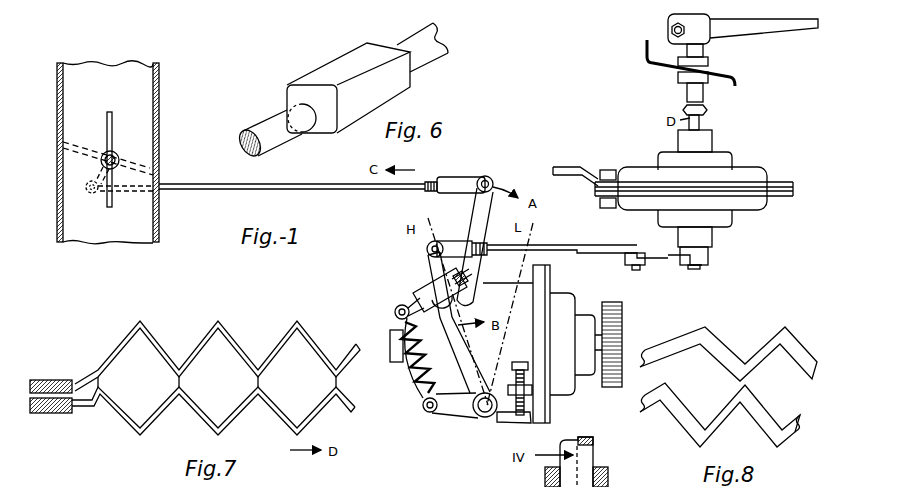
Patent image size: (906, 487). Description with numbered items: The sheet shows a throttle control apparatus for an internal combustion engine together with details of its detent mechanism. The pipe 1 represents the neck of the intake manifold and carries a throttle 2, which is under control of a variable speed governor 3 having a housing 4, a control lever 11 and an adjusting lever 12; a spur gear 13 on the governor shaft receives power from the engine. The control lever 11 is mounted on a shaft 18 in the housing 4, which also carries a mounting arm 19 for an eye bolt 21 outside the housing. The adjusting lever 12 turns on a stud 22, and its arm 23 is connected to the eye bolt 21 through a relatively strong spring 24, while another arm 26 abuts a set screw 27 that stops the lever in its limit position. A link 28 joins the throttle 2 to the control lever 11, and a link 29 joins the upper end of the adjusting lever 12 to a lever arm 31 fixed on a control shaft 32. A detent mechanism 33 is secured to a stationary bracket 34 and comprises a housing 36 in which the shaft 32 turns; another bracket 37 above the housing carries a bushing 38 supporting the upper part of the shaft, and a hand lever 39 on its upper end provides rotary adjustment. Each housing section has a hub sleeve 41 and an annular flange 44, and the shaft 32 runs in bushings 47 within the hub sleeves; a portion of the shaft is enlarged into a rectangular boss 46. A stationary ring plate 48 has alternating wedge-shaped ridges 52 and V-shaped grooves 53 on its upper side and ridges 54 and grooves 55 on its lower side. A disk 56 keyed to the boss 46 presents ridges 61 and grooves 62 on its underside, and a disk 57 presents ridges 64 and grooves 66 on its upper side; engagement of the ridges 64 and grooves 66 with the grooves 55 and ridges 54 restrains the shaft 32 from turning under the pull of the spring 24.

In FIG. 1, the pipe 1 is at (153, 110).
In FIG. 1, the throttle 2 is at (112, 128).
In FIG. 1, the variable speed governor 3 is at (418, 289).
In FIG. 1, the housing 4 is at (507, 281).
In FIG. 1, the control lever 11 is at (487, 214).
In FIG. 1, the adjusting lever 12 is at (474, 352).
In FIG. 1, the spur gear 13 is at (613, 388).
In FIG. 1, the shaft 18 is at (469, 291).
In FIG. 1, the mounting arm 19 is at (432, 275).
In FIG. 1, the eye bolt 21 is at (397, 307).
In FIG. 1, the stud 22 is at (485, 417).
In FIG. 1, the arm 23 is at (440, 416).
In FIG. 1, the spring 24 is at (428, 353).
In FIG. 1, the arm 26 is at (516, 423).
In FIG. 1, the set screw 27 is at (521, 362).
In FIG. 1, the link 28 is at (345, 190).
In FIG. 1, the link 29 is at (580, 253).
In FIG. 1, the lever arm 31 is at (670, 263).
In FIG. 1, the control shaft 32 is at (701, 100).
In FIG. 6, the control shaft 32 is at (437, 56).
In FIG. 1, the detent mechanism 33 is at (652, 153).
In FIG. 1, the stationary bracket 34 is at (582, 172).
In FIG. 1, the housing 36 is at (734, 169).
In FIG. 1, the bracket 37 is at (667, 67).
In FIG. 1, the bushing 38 is at (710, 62).
In FIG. 1, the hand lever 39 is at (778, 33).
In FIG. 1, the hub sleeve 41 is at (545, 478).
In FIG. 7, the annular flange 44 is at (48, 380).
In FIG. 6, the boss 46 is at (330, 68).
In FIG. 1, the bushings 47 is at (608, 469).
In FIG. 7, the ring plate 48 is at (357, 388).
In FIG. 8, the ring plate 48 is at (783, 398).
In FIG. 7, the ridges 52 is at (102, 379).
In FIG. 8, the ridges 52 is at (645, 369).
In FIG. 7, the grooves 53 is at (140, 399).
In FIG. 8, the grooves 53 is at (720, 412).
In FIG. 8, the ridges 54 is at (682, 416).
In FIG. 8, the grooves 55 is at (652, 388).
In FIG. 7, the disk 56 is at (353, 347).
In FIG. 8, the disk 56 is at (796, 341).
In FIG. 7, the disk 57 is at (358, 410).
In FIG. 8, the disk 57 is at (798, 430).
In FIG. 7, the ridges 61 is at (95, 371).
In FIG. 8, the ridges 61 is at (668, 379).
In FIG. 7, the grooves 62 is at (140, 333).
In FIG. 8, the grooves 62 is at (696, 340).
In FIG. 7, the ridges 64 is at (97, 392).
In FIG. 8, the ridges 64 is at (653, 403).
In FIG. 7, the grooves 66 is at (133, 429).
In FIG. 8, the grooves 66 is at (698, 440).